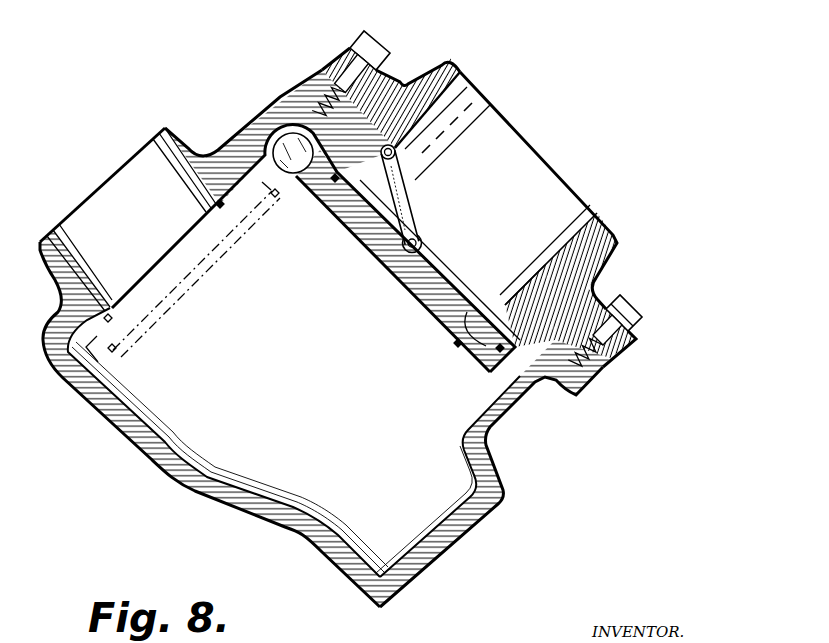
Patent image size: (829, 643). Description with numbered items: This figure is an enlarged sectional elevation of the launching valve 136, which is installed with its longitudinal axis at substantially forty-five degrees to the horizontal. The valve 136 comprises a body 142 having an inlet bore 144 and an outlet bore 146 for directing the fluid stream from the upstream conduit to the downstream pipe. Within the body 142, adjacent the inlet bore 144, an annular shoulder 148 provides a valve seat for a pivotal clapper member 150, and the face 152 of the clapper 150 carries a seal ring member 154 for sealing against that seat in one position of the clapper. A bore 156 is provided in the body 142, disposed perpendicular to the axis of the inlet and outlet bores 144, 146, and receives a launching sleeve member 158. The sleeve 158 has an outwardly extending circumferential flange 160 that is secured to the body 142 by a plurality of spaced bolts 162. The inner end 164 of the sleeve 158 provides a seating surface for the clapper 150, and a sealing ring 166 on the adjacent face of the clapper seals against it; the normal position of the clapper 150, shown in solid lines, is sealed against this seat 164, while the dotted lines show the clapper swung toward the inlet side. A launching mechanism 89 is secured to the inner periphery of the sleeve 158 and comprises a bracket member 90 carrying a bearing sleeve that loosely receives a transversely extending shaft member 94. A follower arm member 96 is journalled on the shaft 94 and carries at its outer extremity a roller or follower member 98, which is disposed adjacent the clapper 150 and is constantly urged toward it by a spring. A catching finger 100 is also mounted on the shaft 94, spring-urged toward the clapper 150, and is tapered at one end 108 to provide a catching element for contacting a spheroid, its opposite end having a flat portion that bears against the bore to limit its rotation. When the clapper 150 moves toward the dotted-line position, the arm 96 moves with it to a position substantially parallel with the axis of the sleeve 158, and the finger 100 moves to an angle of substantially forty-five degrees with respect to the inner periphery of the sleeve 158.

The launching mechanism 89 is at (406, 172).
The flange boss or bracket member 90 is at (468, 86).
The shaft member 94 is at (400, 152).
The finger or follower arm member 96 is at (413, 205).
The roller member or follower member 98 is at (423, 246).
The catching finger 100 is at (430, 110).
The tapered end of finger 108 is at (455, 74).
The valve 136 is at (236, 149).
The body 142 is at (140, 440).
The inlet bore or port 144 is at (140, 150).
The outlet bore or port 146 is at (487, 495).
The annular shoulder 148 is at (113, 311).
The clapper member 150 is at (437, 310).
The face of clapper member 152 is at (382, 268).
The seal ring member 154 is at (216, 206).
The bore 156 is at (532, 304).
The launching sleeve member 158 is at (607, 252).
The circumferential flange 160 is at (612, 347).
The bolts 162 is at (378, 47).
The inner end of sleeve 164 is at (470, 314).
The sealing ring 166 is at (345, 179).